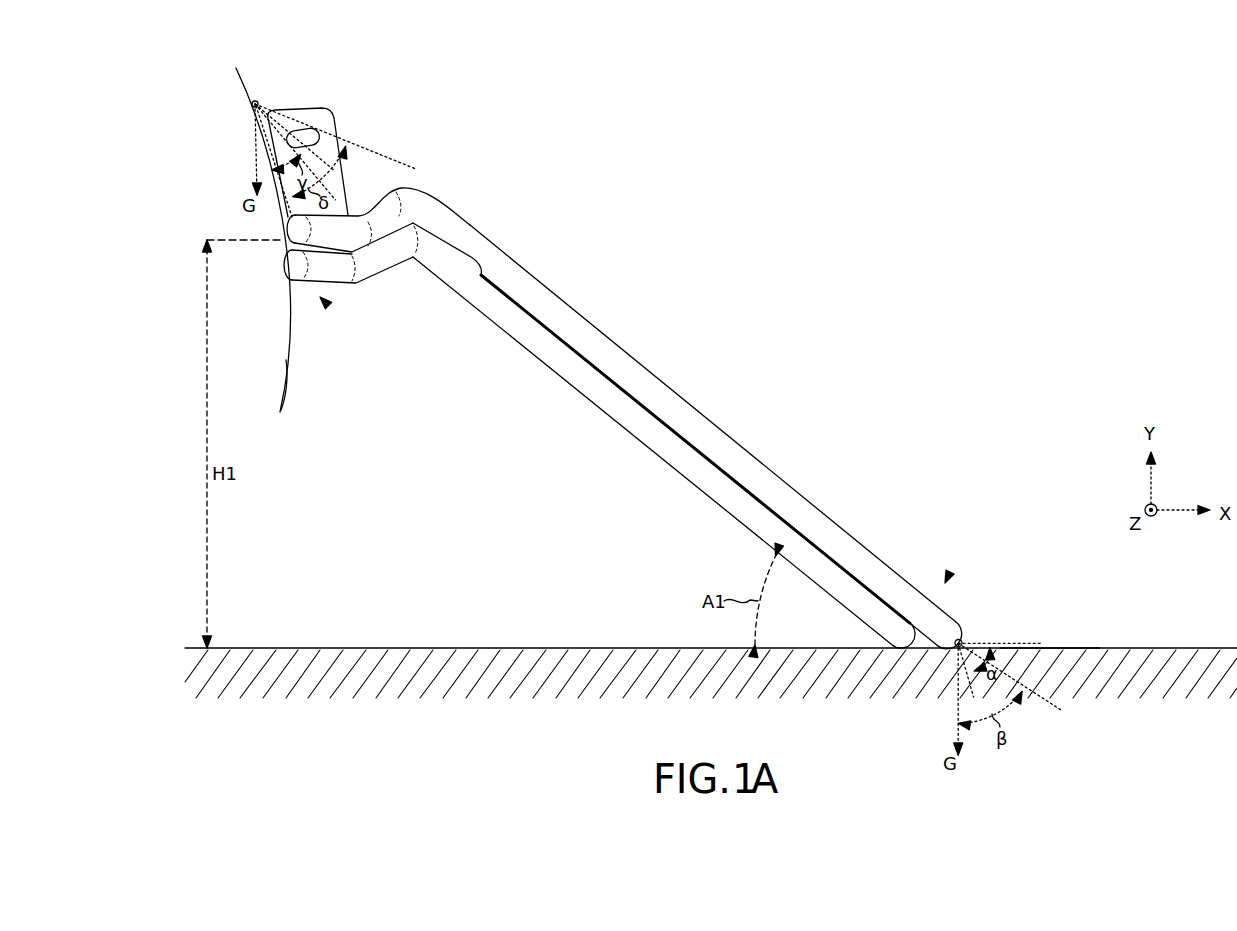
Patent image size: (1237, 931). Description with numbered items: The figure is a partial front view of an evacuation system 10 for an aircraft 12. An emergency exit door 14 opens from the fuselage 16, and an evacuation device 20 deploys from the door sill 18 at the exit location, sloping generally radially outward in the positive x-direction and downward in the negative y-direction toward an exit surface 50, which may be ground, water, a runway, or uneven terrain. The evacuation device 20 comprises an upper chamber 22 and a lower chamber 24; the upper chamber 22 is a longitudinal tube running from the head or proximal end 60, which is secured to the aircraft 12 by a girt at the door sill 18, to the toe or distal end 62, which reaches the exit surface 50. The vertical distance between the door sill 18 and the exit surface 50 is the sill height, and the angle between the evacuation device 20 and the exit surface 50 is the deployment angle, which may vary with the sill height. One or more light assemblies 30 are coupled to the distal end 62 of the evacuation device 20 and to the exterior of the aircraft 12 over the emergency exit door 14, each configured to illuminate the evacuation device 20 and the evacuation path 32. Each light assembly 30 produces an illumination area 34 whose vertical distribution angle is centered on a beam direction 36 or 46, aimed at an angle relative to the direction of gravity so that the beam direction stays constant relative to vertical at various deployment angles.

The evacuation system 10 is at (771, 131).
The aircraft 12 is at (277, 326).
The emergency exit door 14 is at (328, 119).
The fuselage 16 is at (290, 386).
The door sill 18 is at (282, 241).
The evacuation device 20 is at (640, 367).
The upper chamber 22 is at (683, 424).
The lower chamber 24 is at (688, 480).
The light assembly 30 is at (275, 88).
The evacuation path 32 is at (1038, 646).
The illumination area 34 is at (356, 149).
The beam direction 36 is at (1050, 702).
The beam direction 46 is at (353, 215).
The exit surface 50 is at (470, 648).
The proximal end 60 is at (329, 311).
The distal end 62 is at (948, 574).